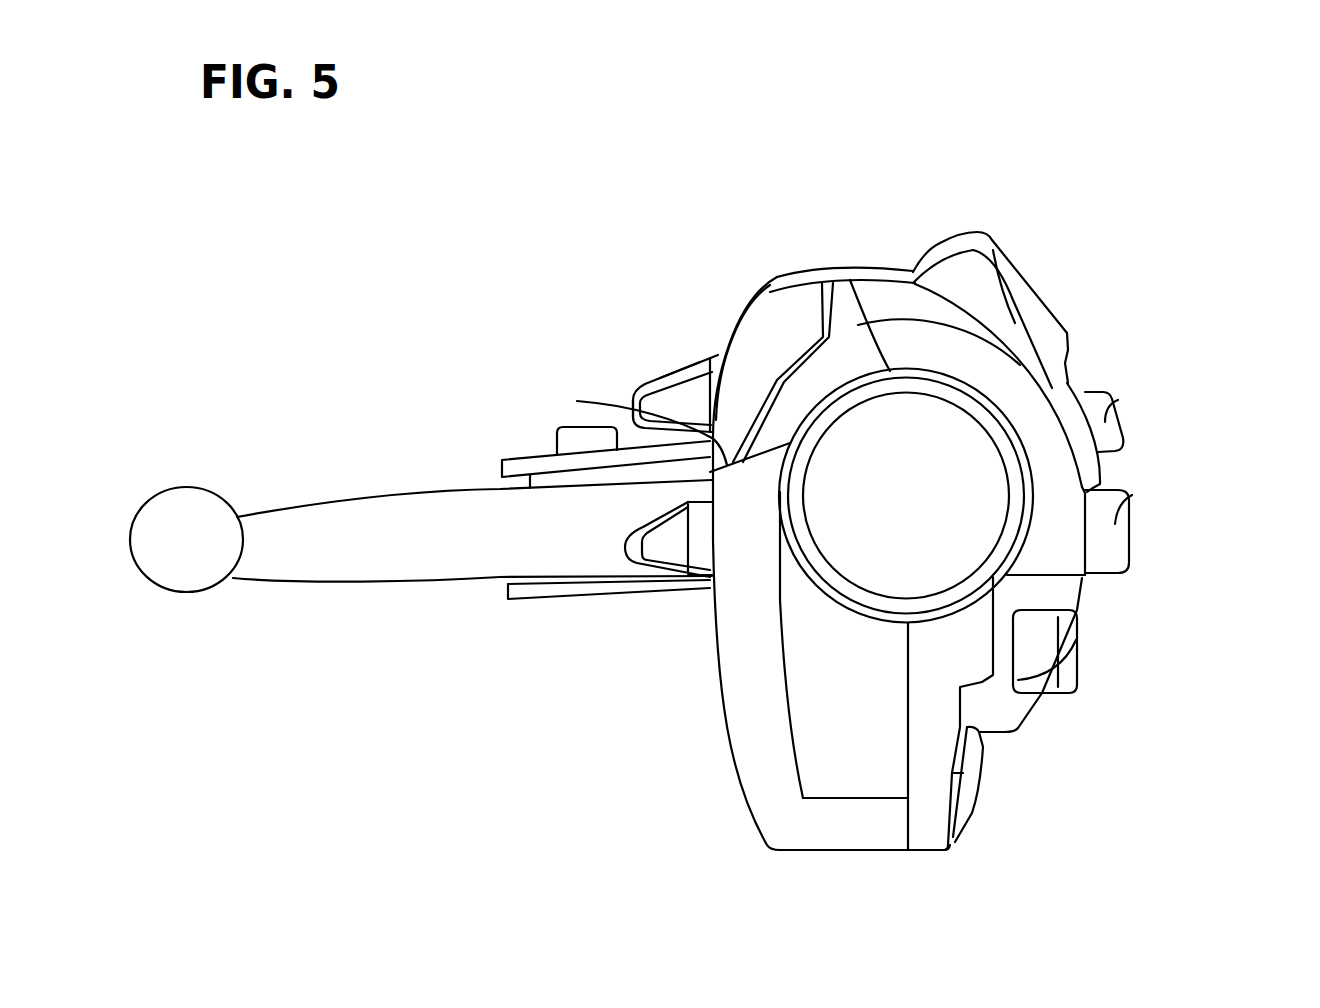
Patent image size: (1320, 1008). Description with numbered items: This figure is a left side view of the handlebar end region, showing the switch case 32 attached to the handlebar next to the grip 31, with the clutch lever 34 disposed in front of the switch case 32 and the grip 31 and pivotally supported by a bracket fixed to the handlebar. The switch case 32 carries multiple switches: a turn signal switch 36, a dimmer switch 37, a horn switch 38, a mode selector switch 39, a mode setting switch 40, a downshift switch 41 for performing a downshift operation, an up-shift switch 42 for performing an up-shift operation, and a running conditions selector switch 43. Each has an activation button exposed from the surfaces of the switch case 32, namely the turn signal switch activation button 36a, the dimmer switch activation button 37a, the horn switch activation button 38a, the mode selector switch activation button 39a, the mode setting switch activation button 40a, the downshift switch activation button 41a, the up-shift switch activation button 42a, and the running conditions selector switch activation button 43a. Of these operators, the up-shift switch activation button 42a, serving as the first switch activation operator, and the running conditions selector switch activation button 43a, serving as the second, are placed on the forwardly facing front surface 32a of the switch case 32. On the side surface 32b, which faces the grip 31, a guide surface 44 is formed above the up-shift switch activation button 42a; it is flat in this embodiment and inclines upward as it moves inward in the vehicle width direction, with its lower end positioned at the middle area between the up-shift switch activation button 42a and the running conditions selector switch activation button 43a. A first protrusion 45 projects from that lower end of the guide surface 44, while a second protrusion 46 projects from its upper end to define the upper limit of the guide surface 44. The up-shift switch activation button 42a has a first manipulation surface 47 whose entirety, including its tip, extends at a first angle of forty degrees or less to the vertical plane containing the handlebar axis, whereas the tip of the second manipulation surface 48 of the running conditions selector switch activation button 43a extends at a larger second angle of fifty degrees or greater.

The grip 31 is at (1003, 412).
The switch case 32 is at (883, 275).
The front surface 32a is at (680, 494).
The side surface 32b is at (947, 350).
The clutch lever 34 is at (406, 500).
The turn signal switch 36 is at (1094, 675).
The turn signal switch activation button 36a is at (1063, 647).
The dimmer switch 37 is at (1080, 366).
The dimmer switch activation button 37a is at (998, 256).
The horn switch 38 is at (1143, 546).
The horn switch activation button 38a is at (1115, 523).
The mode selector switch 39 is at (992, 230).
The mode selector switch activation button 39a is at (993, 245).
The mode setting switch 40 is at (1141, 432).
The mode setting switch activation button 40a is at (1108, 418).
The downshift switch 41 is at (974, 826).
The downshift switch activation button 41a is at (967, 790).
The up-shift switch 42 is at (620, 565).
The up-shift switch activation button 42a is at (677, 560).
The running conditions selector switch 43 is at (691, 352).
The running conditions selector switch activation button 43a is at (633, 403).
The guide surface 44 is at (750, 307).
The first protrusion 45 is at (632, 423).
The second protrusion 46 is at (825, 317).
The first manipulation surface 47 is at (650, 520).
The second manipulation surface 48 is at (667, 373).